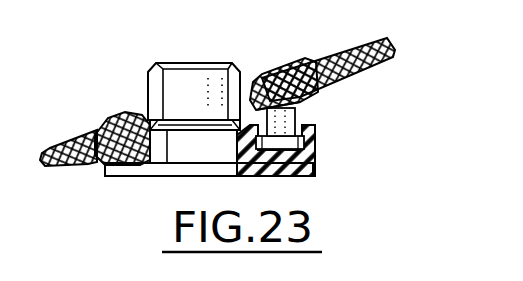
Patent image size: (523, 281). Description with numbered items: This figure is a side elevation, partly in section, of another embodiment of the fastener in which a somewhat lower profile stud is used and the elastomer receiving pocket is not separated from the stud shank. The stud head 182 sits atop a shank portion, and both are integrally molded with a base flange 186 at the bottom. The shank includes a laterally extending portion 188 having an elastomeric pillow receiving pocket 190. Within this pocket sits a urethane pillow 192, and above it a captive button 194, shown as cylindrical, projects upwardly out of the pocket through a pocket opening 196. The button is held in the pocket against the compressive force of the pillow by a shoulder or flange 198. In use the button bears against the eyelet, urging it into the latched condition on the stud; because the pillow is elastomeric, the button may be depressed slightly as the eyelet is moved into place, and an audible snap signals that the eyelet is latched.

The stud head 182 is at (193, 77).
The base flange 186 is at (127, 168).
The laterally extending portion 188 is at (335, 155).
The elastomeric pillow receiving pocket 190 is at (292, 177).
The urethane pillow 192 is at (263, 177).
The captive button 194 is at (293, 108).
The pocket opening 196 is at (297, 127).
The shoulder or flange 198 is at (310, 148).